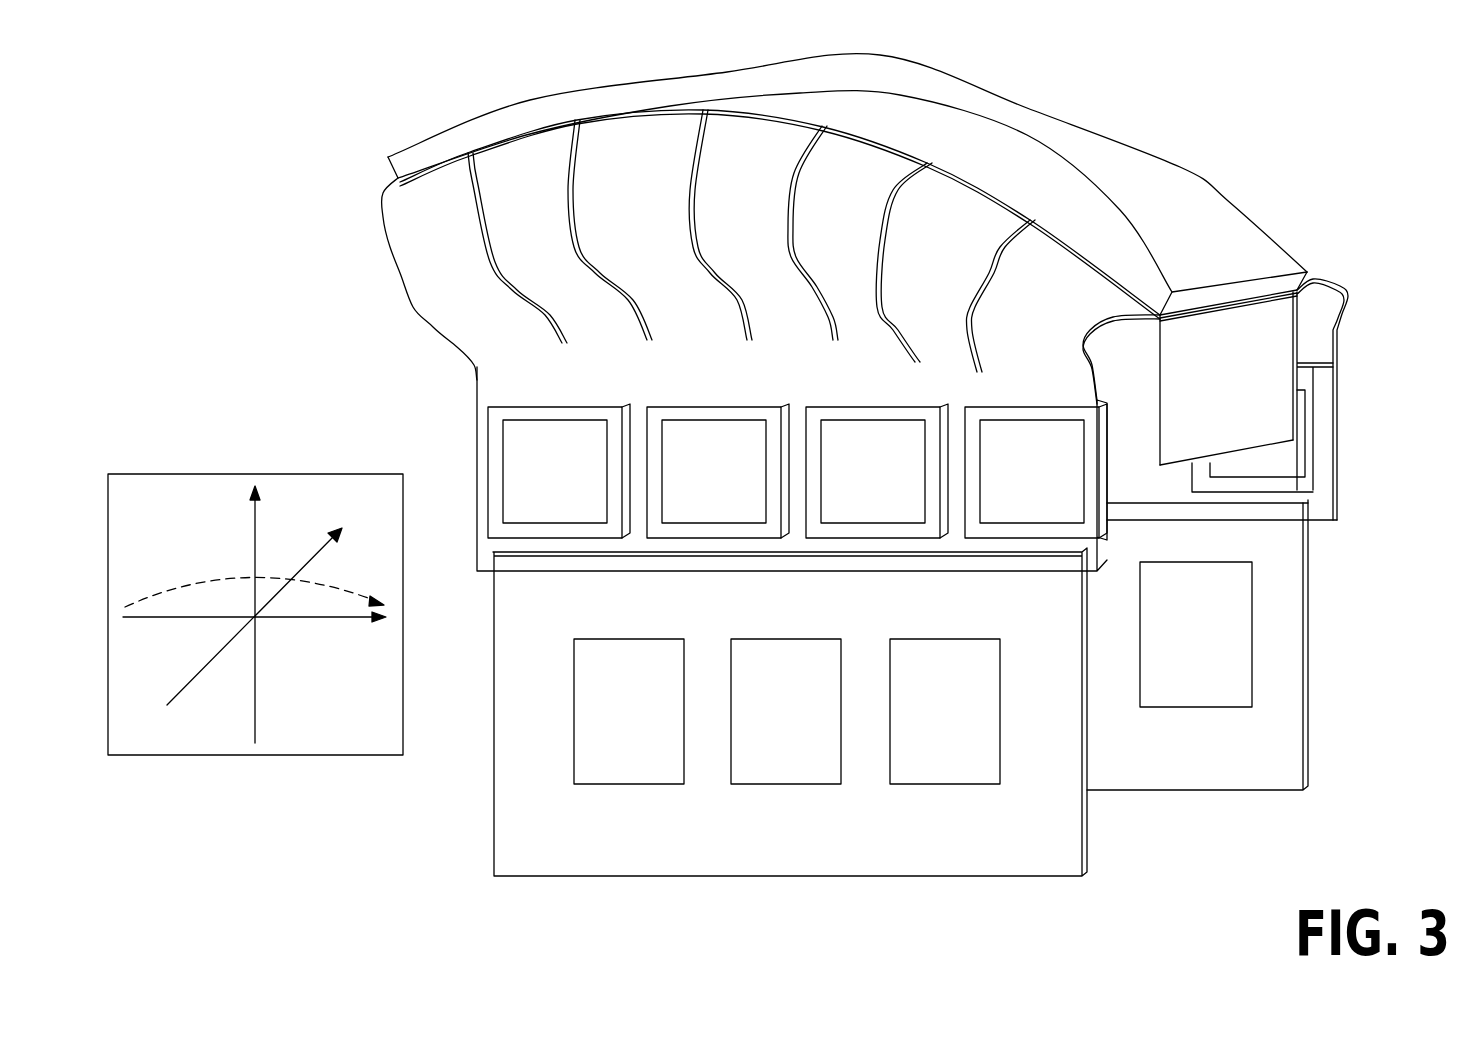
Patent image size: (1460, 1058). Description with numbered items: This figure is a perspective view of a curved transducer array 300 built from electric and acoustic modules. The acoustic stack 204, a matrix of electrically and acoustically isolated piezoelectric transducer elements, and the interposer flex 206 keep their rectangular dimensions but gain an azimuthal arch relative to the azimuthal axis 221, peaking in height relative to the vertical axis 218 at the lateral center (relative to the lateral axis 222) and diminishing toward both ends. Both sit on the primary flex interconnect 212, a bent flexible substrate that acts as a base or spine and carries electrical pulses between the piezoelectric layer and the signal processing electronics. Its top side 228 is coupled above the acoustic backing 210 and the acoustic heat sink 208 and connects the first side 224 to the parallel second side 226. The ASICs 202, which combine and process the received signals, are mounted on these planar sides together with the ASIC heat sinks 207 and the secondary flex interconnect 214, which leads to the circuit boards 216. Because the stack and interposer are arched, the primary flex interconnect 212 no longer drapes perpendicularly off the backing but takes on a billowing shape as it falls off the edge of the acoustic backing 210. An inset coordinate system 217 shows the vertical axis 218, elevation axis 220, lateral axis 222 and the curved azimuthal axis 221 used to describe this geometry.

The curved transducer array 300 is at (1285, 98).
The acoustic stack 204 is at (1200, 178).
The interposer flex 206 is at (1308, 275).
The top side 228 is at (1228, 310).
The primary flex interconnect 212 is at (392, 255).
The acoustic backing 210 is at (1294, 346).
The acoustic heat sink 208 is at (1294, 441).
The first side 224 is at (477, 452).
The ASIC heat sink 207 is at (572, 407).
The ASIC 202 is at (520, 420).
The second side 226 is at (1340, 514).
The secondary flex interconnect 214 is at (1298, 630).
The circuit board 216 is at (617, 784).
The coordinate system 217 is at (173, 455).
The vertical axis 218 is at (255, 523).
The elevation axis 220 is at (203, 665).
The azimuthal axis 221 is at (232, 580).
The lateral axis 222 is at (340, 618).